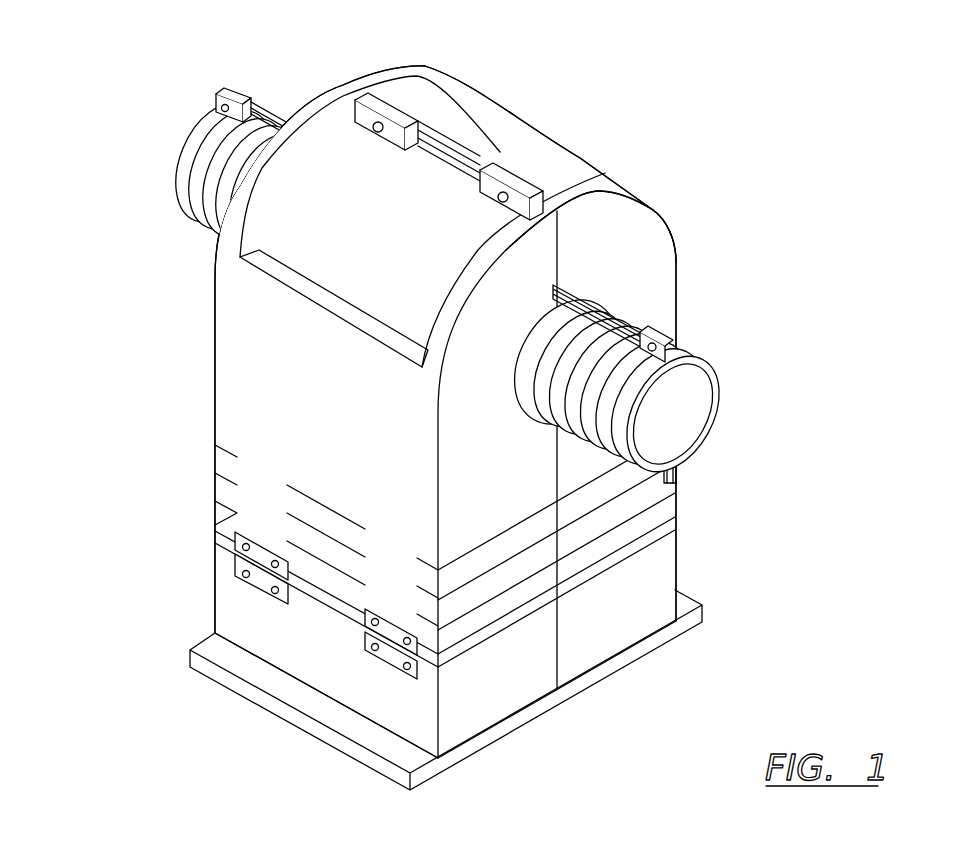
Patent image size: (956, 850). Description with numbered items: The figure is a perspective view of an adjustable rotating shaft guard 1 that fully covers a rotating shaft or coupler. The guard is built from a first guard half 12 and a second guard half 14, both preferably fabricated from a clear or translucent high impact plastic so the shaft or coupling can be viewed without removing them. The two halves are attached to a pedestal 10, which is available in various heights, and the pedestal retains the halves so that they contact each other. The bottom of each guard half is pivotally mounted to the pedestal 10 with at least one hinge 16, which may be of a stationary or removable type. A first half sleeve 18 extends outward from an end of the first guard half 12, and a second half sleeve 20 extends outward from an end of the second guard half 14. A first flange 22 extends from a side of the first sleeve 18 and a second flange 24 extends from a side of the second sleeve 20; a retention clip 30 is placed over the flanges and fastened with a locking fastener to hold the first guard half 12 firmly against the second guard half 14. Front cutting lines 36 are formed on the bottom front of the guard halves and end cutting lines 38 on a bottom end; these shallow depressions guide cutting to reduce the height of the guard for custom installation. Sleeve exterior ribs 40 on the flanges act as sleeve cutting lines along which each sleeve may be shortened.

The adjustable rotating shaft guard 1 is at (178, 402).
The pedestal 10 is at (546, 675).
The first guard half 12 is at (500, 297).
The second guard half 14 is at (652, 230).
The hinge 16 is at (405, 658).
The first half sleeve 18 is at (192, 176).
The second half sleeve 20 is at (717, 388).
The first flange 22 is at (660, 486).
The second flange 24 is at (662, 482).
The retention clip 30 is at (225, 87).
The front cutting lines 36 is at (216, 517).
The end cutting lines 38 is at (467, 553).
The sleeve exterior ribs 40 is at (610, 312).